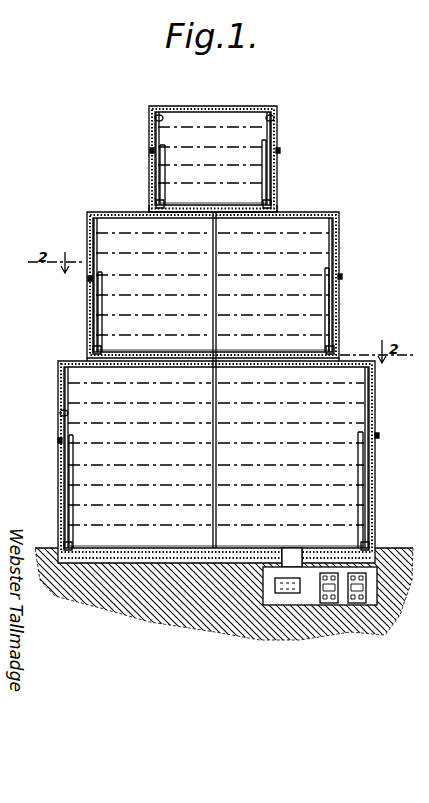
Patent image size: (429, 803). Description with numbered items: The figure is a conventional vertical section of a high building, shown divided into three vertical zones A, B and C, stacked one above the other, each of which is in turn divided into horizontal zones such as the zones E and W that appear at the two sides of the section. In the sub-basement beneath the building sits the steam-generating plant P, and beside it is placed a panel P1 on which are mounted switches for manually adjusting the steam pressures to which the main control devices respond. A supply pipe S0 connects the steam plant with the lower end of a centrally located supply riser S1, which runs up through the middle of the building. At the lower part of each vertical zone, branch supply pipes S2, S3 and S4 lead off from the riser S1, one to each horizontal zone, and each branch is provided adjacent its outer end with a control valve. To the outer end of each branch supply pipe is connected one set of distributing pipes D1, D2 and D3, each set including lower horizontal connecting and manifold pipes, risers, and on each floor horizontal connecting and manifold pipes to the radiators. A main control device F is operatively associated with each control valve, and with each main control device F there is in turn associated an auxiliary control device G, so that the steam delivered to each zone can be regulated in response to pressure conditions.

The vertical zone A is at (216, 460).
The vertical zone B is at (213, 281).
The vertical zone C is at (213, 159).
The distributing pipe D1 is at (60, 414).
The distributing pipe D2 is at (94, 306).
The distributing pipe D3 is at (155, 119).
The horizontal zone E is at (335, 259).
The main control device F is at (152, 214).
The auxiliary control device G is at (150, 150).
The horizontal zone W is at (195, 330).
The supply pipe S0 is at (280, 563).
The supply riser S1 is at (216, 475).
The branch supply pipe S2 is at (136, 556).
The branch supply pipe S3 is at (150, 360).
The branch supply pipe S4 is at (182, 206).
The steam-generating plant P is at (354, 588).
The panel P1 is at (285, 594).